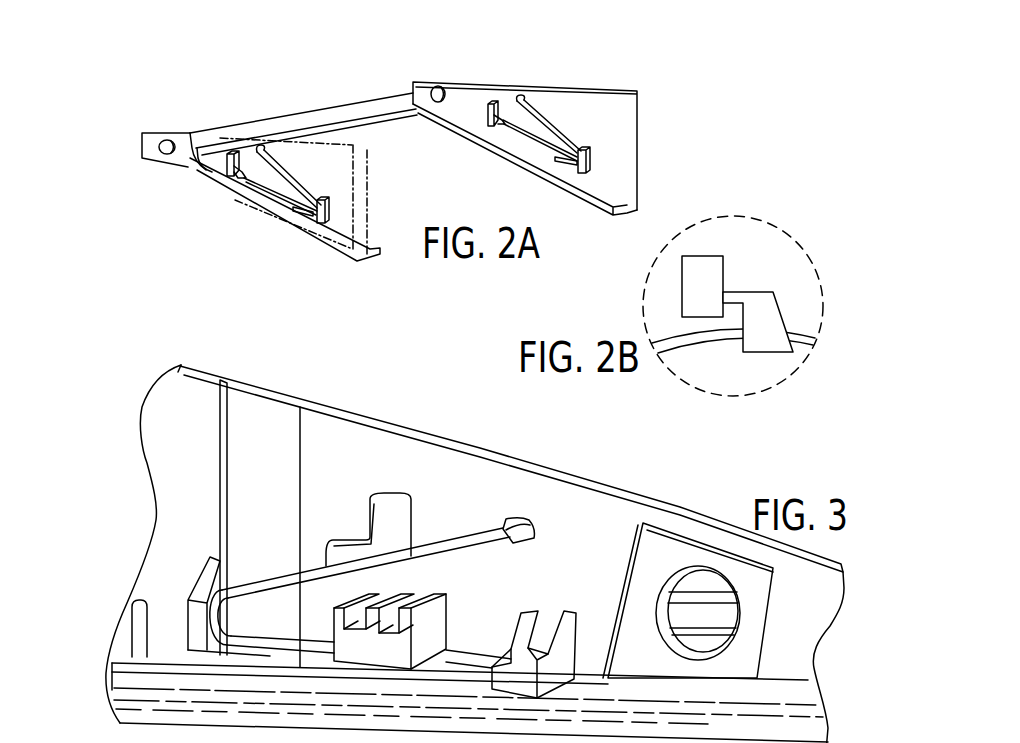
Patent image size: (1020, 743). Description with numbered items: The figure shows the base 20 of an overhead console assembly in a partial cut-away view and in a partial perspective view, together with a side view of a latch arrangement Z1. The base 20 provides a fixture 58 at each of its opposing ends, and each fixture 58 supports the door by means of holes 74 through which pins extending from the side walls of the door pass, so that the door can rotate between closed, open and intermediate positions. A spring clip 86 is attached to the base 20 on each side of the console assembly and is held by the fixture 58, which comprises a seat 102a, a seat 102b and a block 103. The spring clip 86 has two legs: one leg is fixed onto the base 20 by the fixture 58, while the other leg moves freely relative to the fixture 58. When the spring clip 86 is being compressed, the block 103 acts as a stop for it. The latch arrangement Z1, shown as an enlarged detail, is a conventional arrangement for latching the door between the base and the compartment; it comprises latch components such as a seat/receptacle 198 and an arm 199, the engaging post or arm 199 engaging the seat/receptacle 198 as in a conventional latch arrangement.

In FIG. 3, the base 20 is at (218, 356).
In FIG. 2A, the fixture 58 is at (373, 205).
In FIG. 3, the fixture 58 is at (500, 457).
In FIG. 2A, the hole 74 is at (162, 146).
In FIG. 3, the hole 74 is at (700, 576).
In FIG. 2A, the spring clip 86 is at (275, 189).
In FIG. 3, the spring clip 86 is at (263, 578).
In FIG. 2A, the seat 102a is at (237, 178).
In FIG. 3, the seat 102a is at (533, 614).
In FIG. 2A, the seat 102b is at (310, 218).
In FIG. 3, the seat 102b is at (198, 575).
In FIG. 3, the block 103 is at (427, 598).
In FIG. 2B, the seat/receptacle 198 is at (723, 267).
In FIG. 2B, the arm 199 is at (780, 313).
In FIG. 2B, the latch arrangement Z1 is at (752, 238).